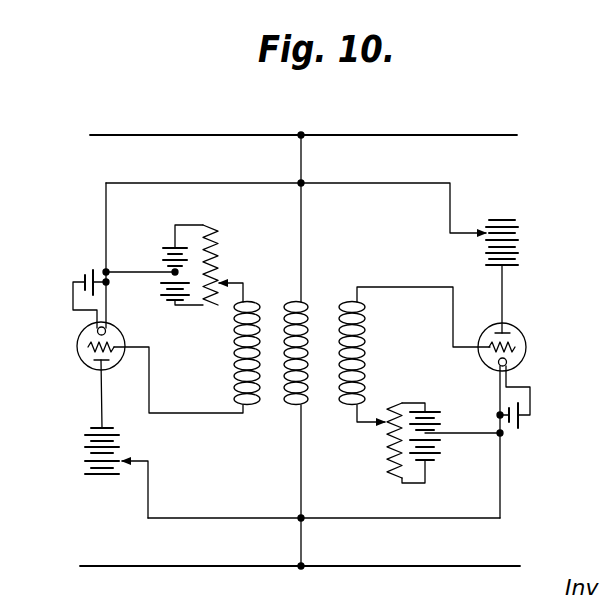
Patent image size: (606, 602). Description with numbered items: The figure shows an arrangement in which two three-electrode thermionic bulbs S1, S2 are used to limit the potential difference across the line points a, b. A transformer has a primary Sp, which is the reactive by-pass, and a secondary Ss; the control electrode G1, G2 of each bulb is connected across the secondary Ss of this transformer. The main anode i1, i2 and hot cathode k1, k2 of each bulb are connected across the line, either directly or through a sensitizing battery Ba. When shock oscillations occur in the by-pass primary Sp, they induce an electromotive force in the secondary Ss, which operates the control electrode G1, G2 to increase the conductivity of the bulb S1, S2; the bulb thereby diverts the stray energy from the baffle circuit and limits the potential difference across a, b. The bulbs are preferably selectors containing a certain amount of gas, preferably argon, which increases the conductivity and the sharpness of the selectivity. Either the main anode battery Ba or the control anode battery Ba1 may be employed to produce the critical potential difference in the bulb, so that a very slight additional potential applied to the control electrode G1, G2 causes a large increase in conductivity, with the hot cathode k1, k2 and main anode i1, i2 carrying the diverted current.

The line terminal a is at (303, 121).
The line terminal b is at (300, 580).
The main anode battery Ba is at (297, 347).
The control anode battery Ba1 is at (300, 354).
The reactive by-pass primary Sp is at (311, 301).
The transformer secondary Ss is at (298, 353).
The three-electrode thermionic bulb S1 is at (108, 354).
The three-electrode thermionic bulb S2 is at (488, 355).
The control electrode G1 is at (83, 350).
The control electrode G2 is at (524, 346).
The hot cathode k1 is at (109, 330).
The hot cathode k2 is at (510, 362).
The main anode i1 is at (89, 364).
The main anode i2 is at (509, 332).